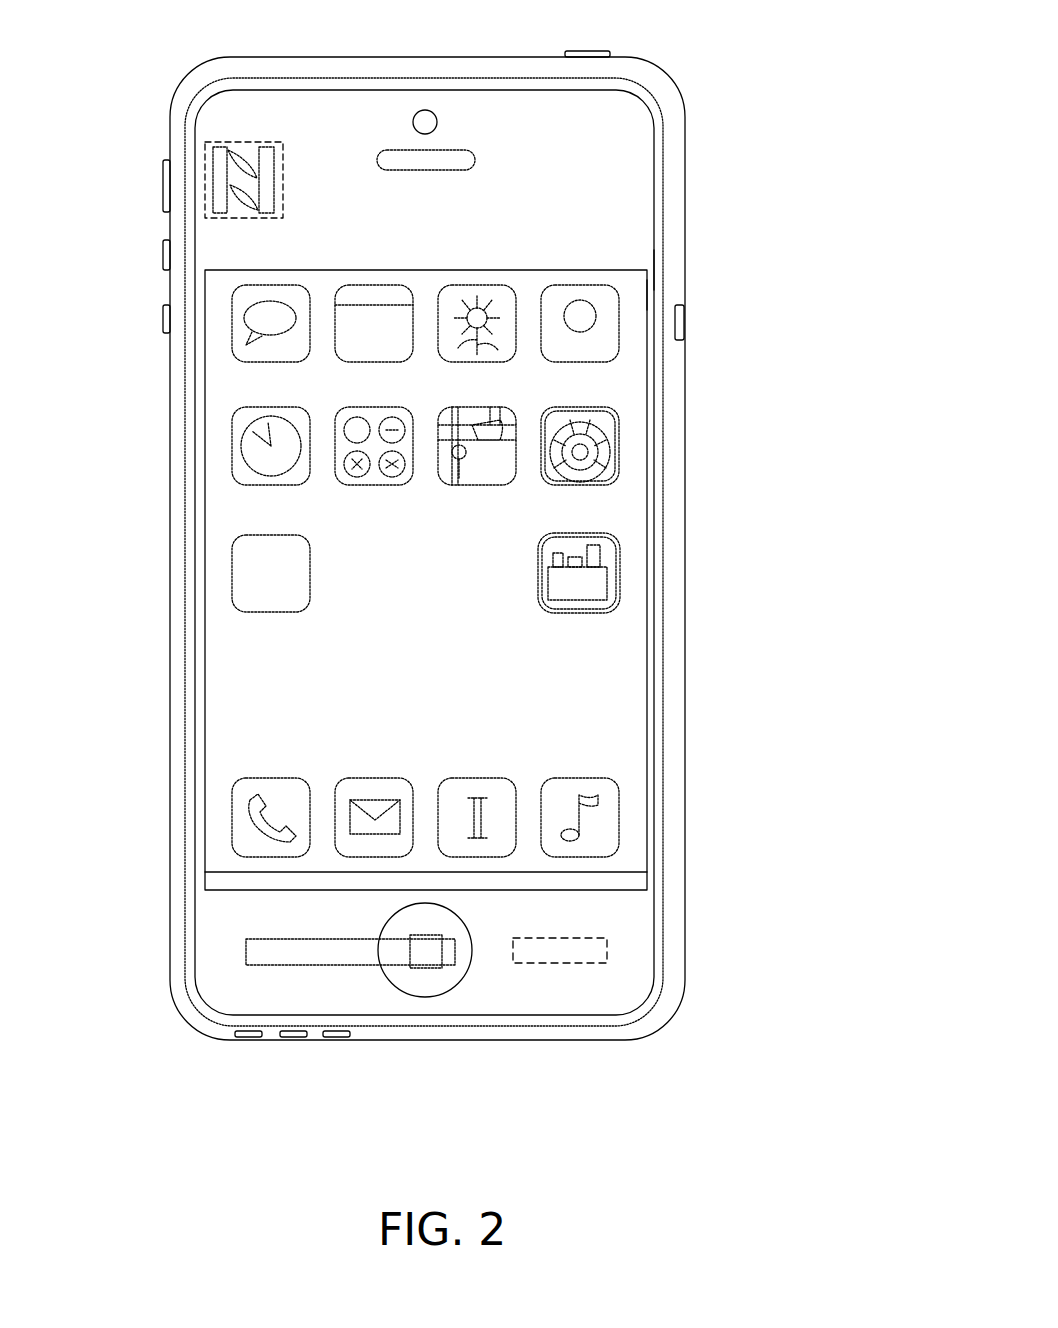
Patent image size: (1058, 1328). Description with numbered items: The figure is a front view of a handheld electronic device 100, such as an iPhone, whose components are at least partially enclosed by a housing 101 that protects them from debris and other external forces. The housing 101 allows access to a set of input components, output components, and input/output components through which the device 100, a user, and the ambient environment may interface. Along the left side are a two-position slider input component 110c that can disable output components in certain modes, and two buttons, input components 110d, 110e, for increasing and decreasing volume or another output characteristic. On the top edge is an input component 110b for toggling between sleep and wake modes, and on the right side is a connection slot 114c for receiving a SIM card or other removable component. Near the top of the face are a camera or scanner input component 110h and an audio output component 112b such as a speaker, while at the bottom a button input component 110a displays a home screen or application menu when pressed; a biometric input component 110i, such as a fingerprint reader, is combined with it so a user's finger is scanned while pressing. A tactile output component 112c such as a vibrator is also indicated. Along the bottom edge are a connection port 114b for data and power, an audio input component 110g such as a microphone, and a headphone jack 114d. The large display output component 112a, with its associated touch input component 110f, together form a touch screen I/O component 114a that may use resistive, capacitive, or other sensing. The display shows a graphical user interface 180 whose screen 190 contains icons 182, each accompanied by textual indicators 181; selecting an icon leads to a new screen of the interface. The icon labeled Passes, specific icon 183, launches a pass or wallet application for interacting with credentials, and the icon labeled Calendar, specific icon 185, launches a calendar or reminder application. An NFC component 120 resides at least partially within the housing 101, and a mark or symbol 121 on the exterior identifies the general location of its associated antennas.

The electronic device 100 is at (471, 1163).
The housing 101 is at (685, 135).
The input component 110a is at (468, 935).
The input component 110b is at (590, 51).
The input component 110c is at (163, 188).
The input component 110d is at (163, 258).
The input component 110e is at (163, 325).
The touch input component 110f is at (642, 278).
The audio input component 110g is at (293, 1037).
The camera and/or scanner input component 110h is at (437, 122).
The biometric input component 110i is at (293, 939).
The display output component 112a is at (647, 295).
The audio output component 112b is at (475, 160).
The tactile output component 112c is at (580, 938).
The touch screen I/O component 114a is at (628, 268).
The connection port 114b is at (337, 1037).
The connection slot 114c is at (684, 322).
The headphone jack 114d is at (248, 1037).
The NFC component 120 is at (284, 162).
The mark or symbol 121 is at (275, 185).
The graphical user interface 180 is at (582, 570).
The textual indicators 181 is at (352, 626).
The icons 182 is at (491, 561).
The specific icon 183 is at (538, 560).
The specific icon 185 is at (395, 285).
The screen 190 is at (660, 885).